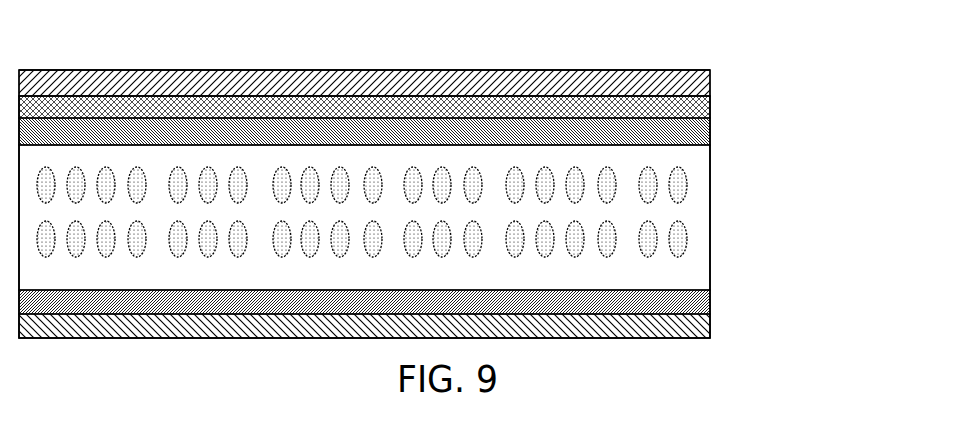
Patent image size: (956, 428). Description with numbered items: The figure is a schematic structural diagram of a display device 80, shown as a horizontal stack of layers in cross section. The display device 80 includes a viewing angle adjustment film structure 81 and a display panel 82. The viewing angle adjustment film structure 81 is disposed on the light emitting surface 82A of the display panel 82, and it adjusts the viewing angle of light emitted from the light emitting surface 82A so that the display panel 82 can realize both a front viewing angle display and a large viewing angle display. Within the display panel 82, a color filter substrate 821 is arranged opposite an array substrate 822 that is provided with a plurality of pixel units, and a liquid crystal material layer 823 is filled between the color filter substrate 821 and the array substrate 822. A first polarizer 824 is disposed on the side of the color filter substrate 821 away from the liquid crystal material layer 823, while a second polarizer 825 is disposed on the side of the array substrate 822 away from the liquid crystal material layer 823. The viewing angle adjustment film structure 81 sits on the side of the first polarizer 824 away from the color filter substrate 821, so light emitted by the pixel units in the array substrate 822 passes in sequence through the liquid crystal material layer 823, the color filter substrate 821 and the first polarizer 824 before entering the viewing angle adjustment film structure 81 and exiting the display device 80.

The display device 80 is at (58, 33).
The viewing angle adjustment film structure 81 is at (710, 73).
The display panel 82 is at (797, 82).
The light emitting surface 82A is at (397, 70).
The color filter substrate 821 is at (710, 126).
The array substrate 822 is at (710, 300).
The liquid crystal material layer 823 is at (710, 222).
The first polarizer 824 is at (710, 100).
The second polarizer 825 is at (710, 333).